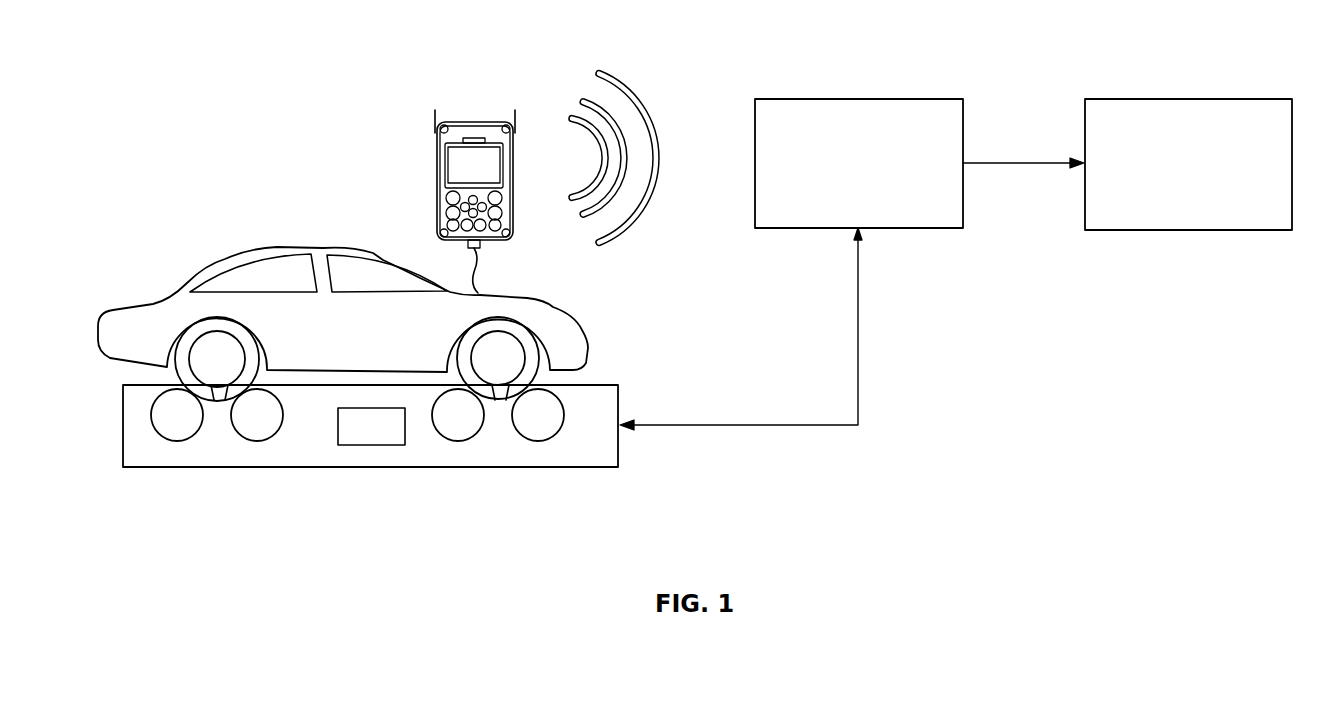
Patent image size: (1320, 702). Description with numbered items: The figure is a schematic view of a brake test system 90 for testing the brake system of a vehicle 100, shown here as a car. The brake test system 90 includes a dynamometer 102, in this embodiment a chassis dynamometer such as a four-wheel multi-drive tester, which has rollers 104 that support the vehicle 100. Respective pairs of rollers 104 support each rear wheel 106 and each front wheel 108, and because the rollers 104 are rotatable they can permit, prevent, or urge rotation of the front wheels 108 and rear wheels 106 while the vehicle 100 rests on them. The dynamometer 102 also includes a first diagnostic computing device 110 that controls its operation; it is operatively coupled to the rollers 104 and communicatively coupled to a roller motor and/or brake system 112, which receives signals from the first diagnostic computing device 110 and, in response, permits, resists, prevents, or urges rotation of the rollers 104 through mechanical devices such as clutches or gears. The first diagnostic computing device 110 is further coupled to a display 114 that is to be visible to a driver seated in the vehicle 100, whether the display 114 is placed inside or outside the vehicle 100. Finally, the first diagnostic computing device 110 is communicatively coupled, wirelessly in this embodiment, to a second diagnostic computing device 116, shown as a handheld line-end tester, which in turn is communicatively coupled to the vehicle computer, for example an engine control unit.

The brake test system 90 is at (387, 90).
The vehicle 100 is at (203, 270).
The dynamometer 102 is at (620, 450).
The rollers 104 is at (160, 427).
The rear wheel 106 is at (217, 402).
The front wheel 108 is at (503, 400).
The first diagnostic computing device 110 is at (896, 99).
The roller motor and/or brake system 112 is at (373, 437).
The display 114 is at (1224, 99).
The second diagnostic computing device 116 is at (475, 120).